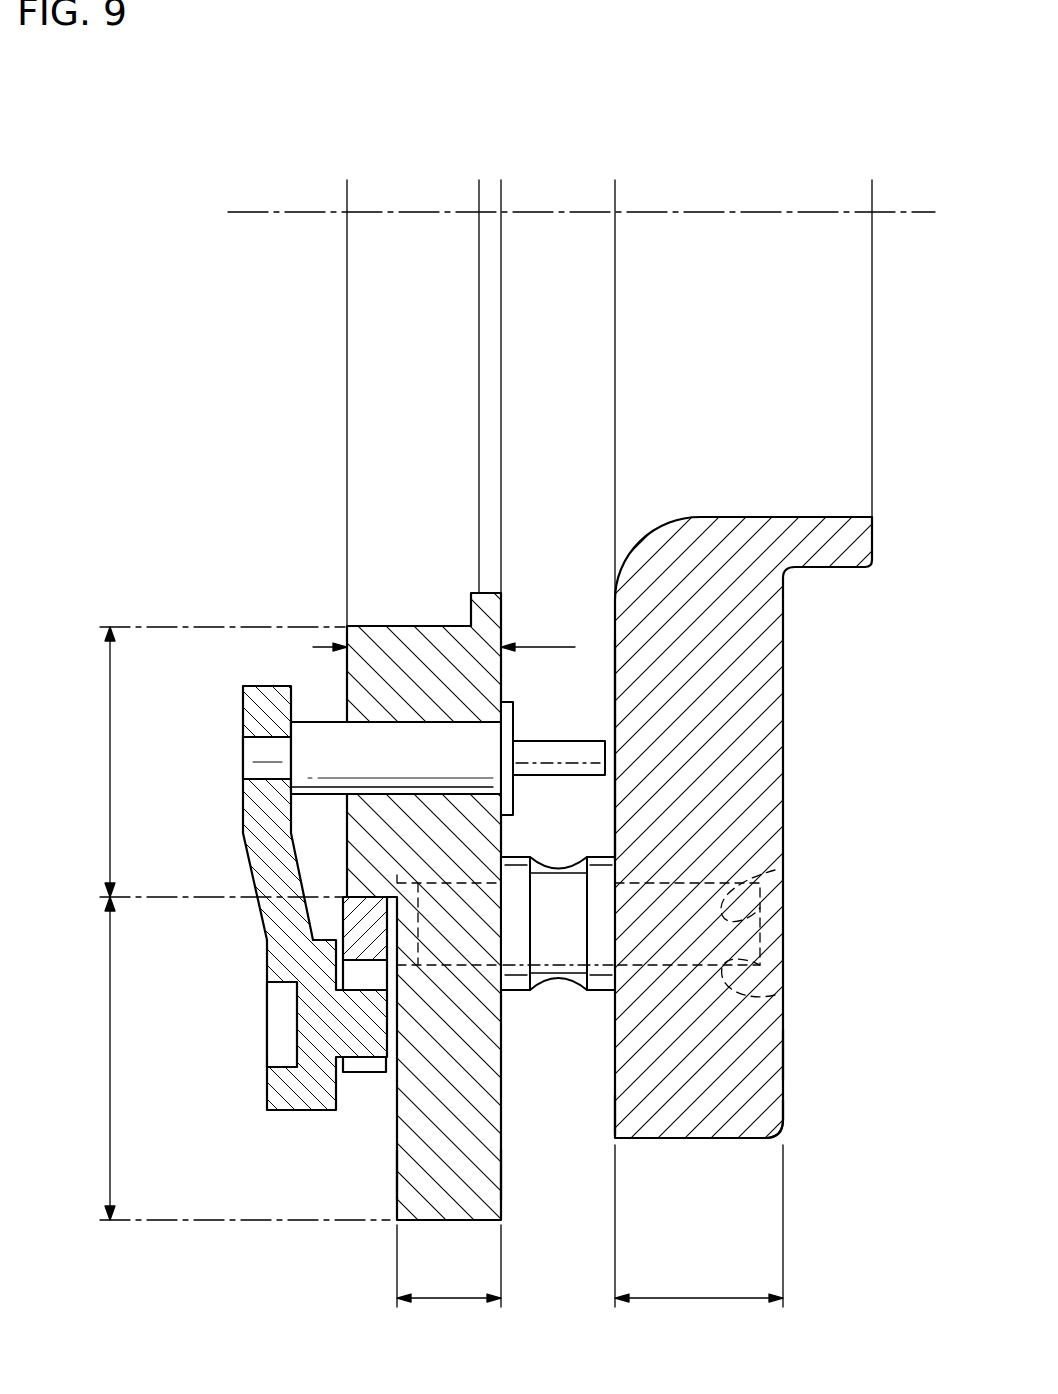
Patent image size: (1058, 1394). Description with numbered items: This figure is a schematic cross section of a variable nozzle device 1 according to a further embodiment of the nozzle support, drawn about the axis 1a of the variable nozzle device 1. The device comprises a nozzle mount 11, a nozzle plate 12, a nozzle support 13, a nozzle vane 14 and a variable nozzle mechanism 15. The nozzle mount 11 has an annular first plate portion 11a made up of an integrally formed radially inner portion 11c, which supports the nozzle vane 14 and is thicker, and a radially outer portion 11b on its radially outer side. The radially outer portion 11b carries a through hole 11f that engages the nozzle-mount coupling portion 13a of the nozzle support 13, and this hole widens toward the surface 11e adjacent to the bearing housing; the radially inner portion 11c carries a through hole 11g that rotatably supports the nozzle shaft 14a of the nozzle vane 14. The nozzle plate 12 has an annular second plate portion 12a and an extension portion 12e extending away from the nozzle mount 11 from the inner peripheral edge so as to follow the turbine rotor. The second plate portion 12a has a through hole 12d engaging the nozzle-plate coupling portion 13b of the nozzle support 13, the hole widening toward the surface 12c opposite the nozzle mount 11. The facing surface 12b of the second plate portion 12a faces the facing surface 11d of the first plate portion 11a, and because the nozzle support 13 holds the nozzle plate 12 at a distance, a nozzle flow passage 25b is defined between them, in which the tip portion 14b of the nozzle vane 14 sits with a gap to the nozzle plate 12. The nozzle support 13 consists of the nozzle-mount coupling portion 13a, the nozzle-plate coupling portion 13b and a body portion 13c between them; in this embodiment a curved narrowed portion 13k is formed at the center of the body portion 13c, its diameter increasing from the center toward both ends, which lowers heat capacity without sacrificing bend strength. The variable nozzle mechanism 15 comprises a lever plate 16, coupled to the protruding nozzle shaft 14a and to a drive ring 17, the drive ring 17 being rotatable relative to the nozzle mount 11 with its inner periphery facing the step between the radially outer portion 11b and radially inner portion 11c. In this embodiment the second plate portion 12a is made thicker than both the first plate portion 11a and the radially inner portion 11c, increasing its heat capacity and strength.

The variable nozzle device 1 is at (203, 532).
The axis 1a is at (290, 215).
The nozzle mount 11 is at (529, 915).
The first plate portion 11a is at (490, 1195).
The radially outer portion 11b is at (235, 1058).
The radially inner portion 11c is at (212, 762).
The facing surface 11d is at (501, 1172).
The surface 11e is at (397, 1172).
The through hole 11f is at (447, 912).
The through hole 11g is at (378, 722).
The nozzle plate 12 is at (783, 680).
The second plate portion 12a is at (760, 1052).
The facing surface 12b is at (615, 1118).
The surface 12c is at (783, 1112).
The through hole 12d is at (760, 910).
The extension portion 12e is at (812, 557).
The nozzle support 13 is at (542, 935).
The nozzle-mount coupling portion 13a is at (462, 988).
The nozzle-plate coupling portion 13b is at (775, 995).
The body portion 13c is at (528, 992).
The curved narrowed portion 13k is at (558, 866).
The nozzle vane 14 is at (389, 732).
The nozzle shaft 14a is at (318, 720).
The tip portion 14b is at (535, 741).
The variable nozzle mechanism 15 is at (178, 1065).
The lever plate 16 is at (267, 1090).
The drive ring 17 is at (365, 1072).
The nozzle flow passage 25b is at (608, 823).